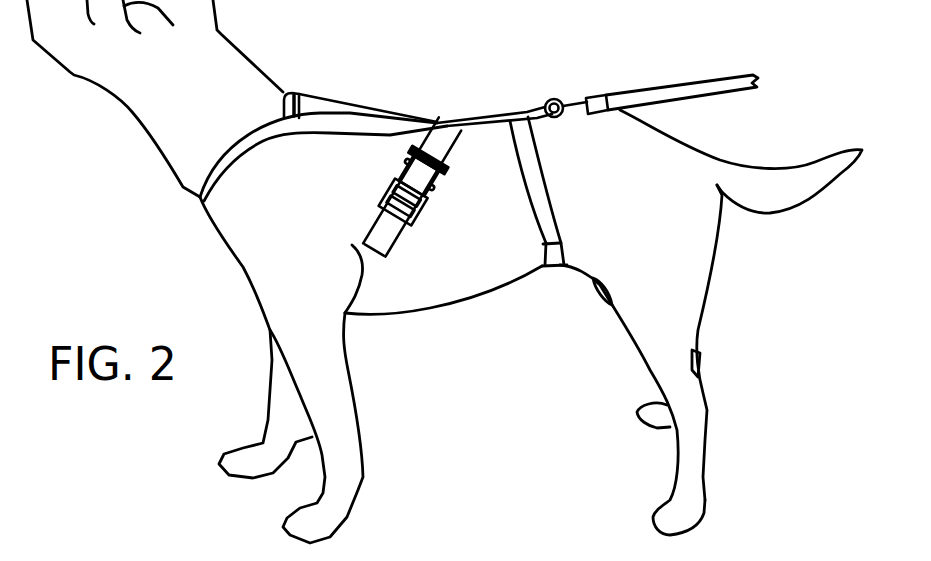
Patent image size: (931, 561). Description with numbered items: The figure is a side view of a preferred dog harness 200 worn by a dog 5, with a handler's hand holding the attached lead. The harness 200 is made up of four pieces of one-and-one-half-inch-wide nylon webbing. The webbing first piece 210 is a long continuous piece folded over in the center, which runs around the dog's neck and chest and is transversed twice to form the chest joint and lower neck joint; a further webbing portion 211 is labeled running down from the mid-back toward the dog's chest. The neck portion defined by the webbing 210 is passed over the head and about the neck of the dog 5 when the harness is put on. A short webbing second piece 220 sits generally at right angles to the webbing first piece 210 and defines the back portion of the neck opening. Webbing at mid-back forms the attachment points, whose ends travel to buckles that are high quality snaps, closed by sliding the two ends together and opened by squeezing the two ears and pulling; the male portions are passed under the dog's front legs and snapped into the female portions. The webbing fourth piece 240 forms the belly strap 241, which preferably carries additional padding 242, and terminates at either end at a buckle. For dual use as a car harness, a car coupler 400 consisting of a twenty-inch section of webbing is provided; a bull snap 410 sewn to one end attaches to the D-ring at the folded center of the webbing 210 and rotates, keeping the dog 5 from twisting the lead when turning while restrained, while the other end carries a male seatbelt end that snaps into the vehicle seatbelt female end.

The dog 5 is at (125, 116).
The harness 200 is at (457, 108).
The webbing first piece 210 is at (367, 137).
The chest strap 211 is at (412, 238).
The webbing second piece 220 is at (295, 91).
The webbing fourth piece 240 is at (567, 191).
The belly strap 241 is at (545, 187).
The padding 242 is at (540, 268).
The car coupler 400 is at (663, 93).
The bull snap 410 is at (563, 100).